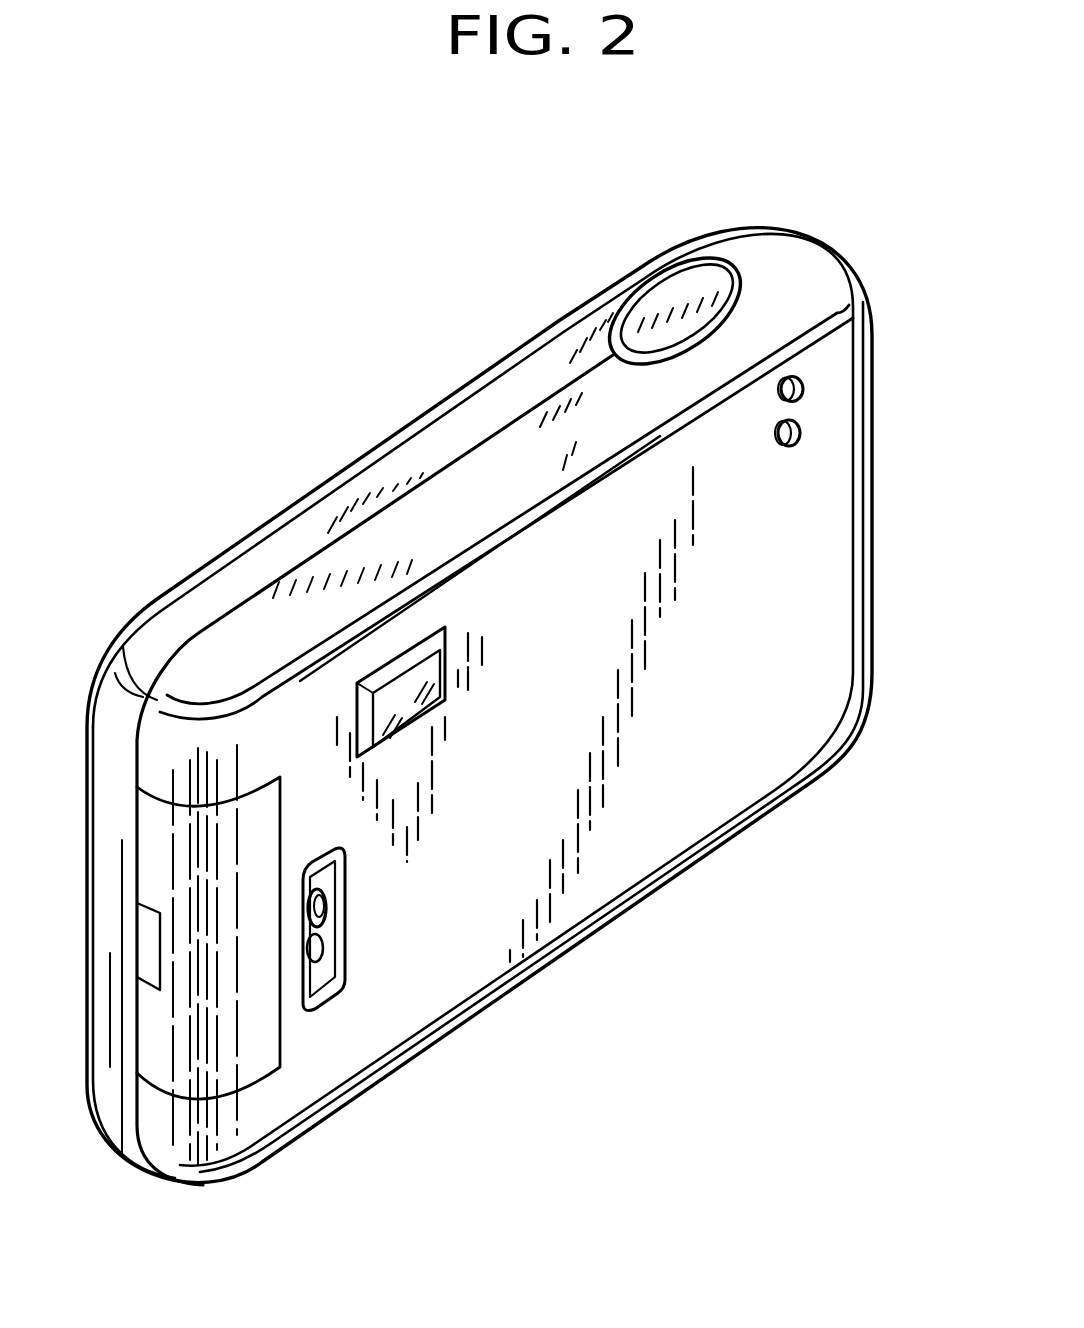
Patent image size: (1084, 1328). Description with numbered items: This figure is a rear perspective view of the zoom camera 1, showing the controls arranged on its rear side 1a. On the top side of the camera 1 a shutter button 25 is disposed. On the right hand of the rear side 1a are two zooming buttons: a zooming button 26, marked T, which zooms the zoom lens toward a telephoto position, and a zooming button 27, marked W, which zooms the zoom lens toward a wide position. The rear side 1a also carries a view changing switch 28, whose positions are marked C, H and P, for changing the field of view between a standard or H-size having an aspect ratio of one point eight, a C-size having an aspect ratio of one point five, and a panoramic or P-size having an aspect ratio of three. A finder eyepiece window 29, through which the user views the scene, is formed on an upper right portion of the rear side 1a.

The camera 1 is at (491, 236).
The rear side 1a is at (557, 957).
The shutter button 25 is at (668, 303).
The zooming button 26 is at (803, 382).
The zooming button 27 is at (800, 431).
The view changing switch 28 is at (323, 883).
The finder eyepiece window 29 is at (437, 697).